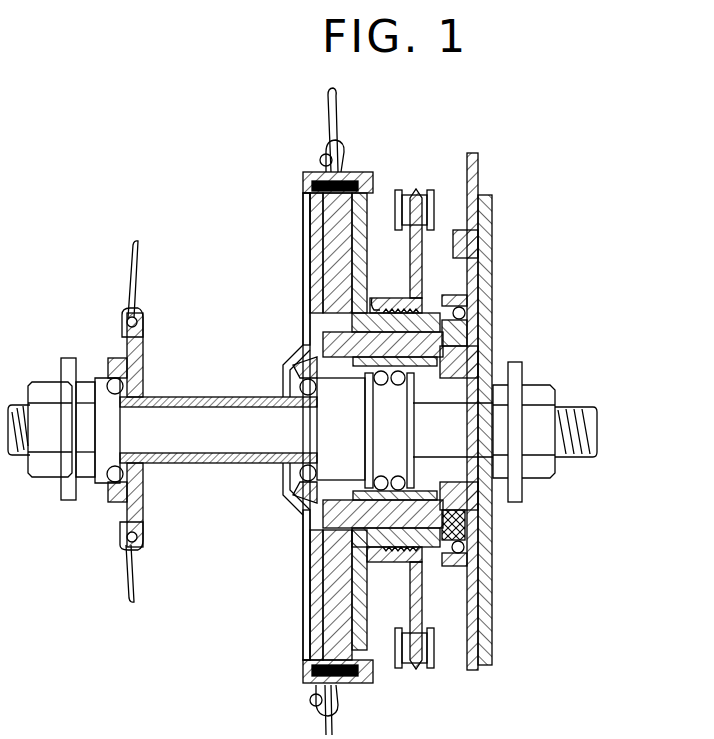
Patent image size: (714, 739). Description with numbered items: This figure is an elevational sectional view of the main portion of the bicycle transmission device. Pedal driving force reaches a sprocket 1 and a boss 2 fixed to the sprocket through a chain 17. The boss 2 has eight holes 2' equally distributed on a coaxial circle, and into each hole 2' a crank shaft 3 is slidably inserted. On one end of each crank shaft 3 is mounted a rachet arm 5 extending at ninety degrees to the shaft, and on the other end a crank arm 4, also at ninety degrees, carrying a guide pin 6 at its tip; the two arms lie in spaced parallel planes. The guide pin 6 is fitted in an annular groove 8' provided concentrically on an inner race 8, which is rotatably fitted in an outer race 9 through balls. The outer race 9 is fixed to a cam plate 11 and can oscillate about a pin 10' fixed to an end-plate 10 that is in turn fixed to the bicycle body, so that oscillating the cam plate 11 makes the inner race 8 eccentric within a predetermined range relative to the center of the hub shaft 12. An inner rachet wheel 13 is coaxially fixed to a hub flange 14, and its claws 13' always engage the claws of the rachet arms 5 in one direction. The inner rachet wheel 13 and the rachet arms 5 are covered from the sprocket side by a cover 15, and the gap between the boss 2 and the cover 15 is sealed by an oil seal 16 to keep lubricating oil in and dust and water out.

The sprocket 1 is at (422, 262).
The boss 2 is at (421, 421).
The holes 2' is at (230, 371).
The crank shaft 3 is at (477, 333).
The crank arm 4 is at (483, 375).
The rachet arm 5 is at (340, 245).
The guide pin 6 is at (473, 352).
The inner race 8 is at (492, 428).
The annular groove 8' is at (494, 516).
The outer race 9 is at (470, 312).
The end-plate 10 is at (517, 429).
The pin 10' is at (495, 239).
The cam plate 11 is at (478, 177).
The hub shaft 12 is at (598, 420).
The inner rachet wheel 13 is at (279, 426).
The claws 13' is at (291, 435).
The hub flange 14 is at (282, 368).
The cover 15 is at (372, 203).
The oil seal 16 is at (373, 297).
The chain 17 is at (420, 190).